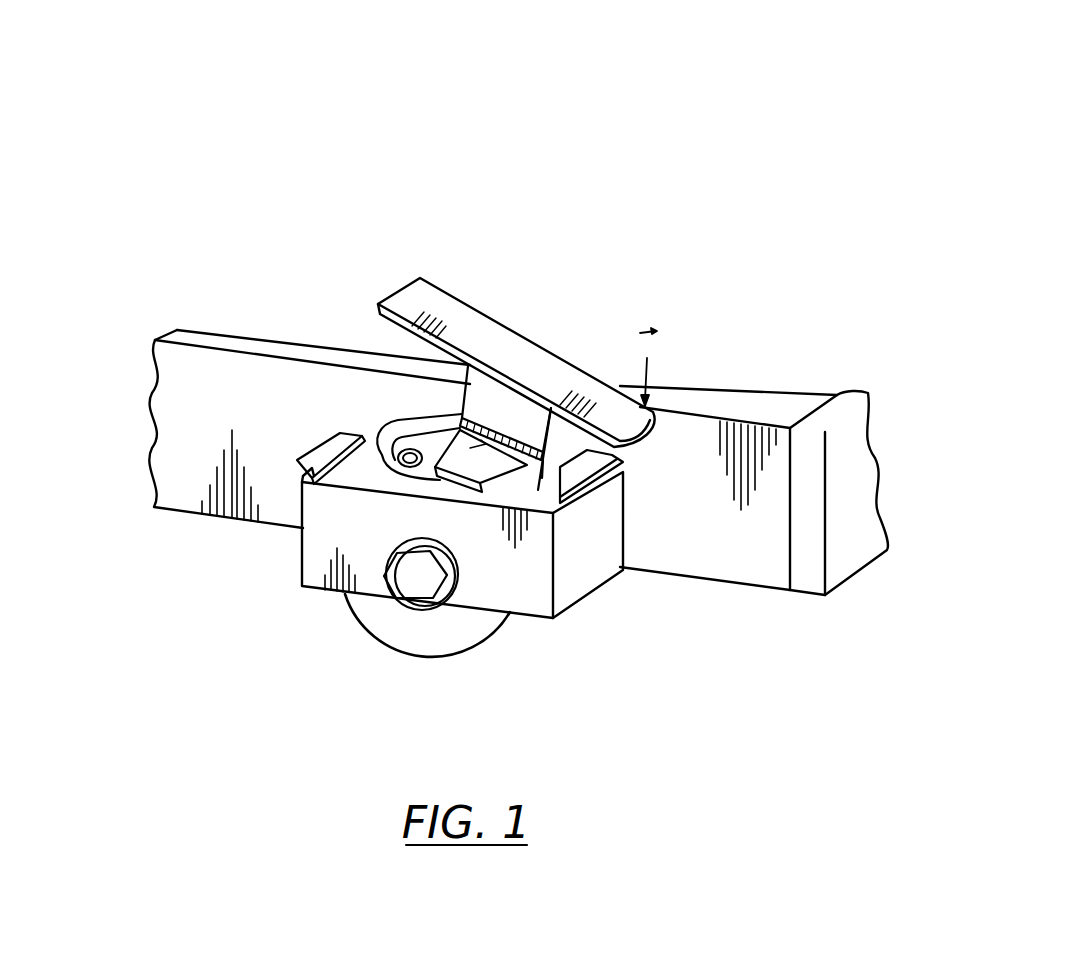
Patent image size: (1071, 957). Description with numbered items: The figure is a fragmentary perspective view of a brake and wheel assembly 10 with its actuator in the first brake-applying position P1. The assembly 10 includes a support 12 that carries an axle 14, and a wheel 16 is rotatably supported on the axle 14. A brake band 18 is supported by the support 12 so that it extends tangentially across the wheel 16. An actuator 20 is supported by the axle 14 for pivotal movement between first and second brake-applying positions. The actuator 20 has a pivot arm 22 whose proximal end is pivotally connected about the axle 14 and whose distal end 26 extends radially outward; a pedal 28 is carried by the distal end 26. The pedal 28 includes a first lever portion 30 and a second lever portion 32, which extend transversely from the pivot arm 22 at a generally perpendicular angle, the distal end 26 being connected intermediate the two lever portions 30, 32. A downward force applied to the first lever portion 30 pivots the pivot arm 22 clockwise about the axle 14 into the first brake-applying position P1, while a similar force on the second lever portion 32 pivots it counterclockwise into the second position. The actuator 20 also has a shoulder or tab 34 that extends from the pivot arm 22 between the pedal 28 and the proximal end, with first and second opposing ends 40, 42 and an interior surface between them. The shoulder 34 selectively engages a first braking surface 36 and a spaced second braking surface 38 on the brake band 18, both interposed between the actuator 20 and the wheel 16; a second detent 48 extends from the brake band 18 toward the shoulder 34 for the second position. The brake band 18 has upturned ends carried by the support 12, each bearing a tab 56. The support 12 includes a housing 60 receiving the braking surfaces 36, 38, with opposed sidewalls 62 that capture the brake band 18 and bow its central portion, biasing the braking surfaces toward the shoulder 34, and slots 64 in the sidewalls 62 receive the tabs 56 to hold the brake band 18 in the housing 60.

The brake and wheel assembly 10 is at (617, 215).
The support 12 is at (265, 522).
The axle 14 is at (422, 600).
The wheel 16 is at (378, 640).
The brake band 18 is at (427, 450).
The actuator 20 is at (473, 305).
The pivot arm 22 is at (450, 443).
The distal end 26 is at (420, 443).
The pedal 28 is at (501, 437).
The first lever portion 30 is at (609, 412).
The second lever portion 32 is at (433, 312).
The shoulder or tab 34 is at (488, 435).
The first braking surface 36 is at (516, 500).
The second braking surface 38 is at (390, 464).
The first opposing end 40 is at (540, 500).
The second opposing end 42 is at (414, 445).
The second detent 48 is at (405, 465).
The tab 56 is at (297, 458).
The housing 60 is at (547, 624).
The sidewalls 62 is at (297, 555).
The slots 64 is at (303, 475).
The first brake-applying position P1 is at (433, 312).